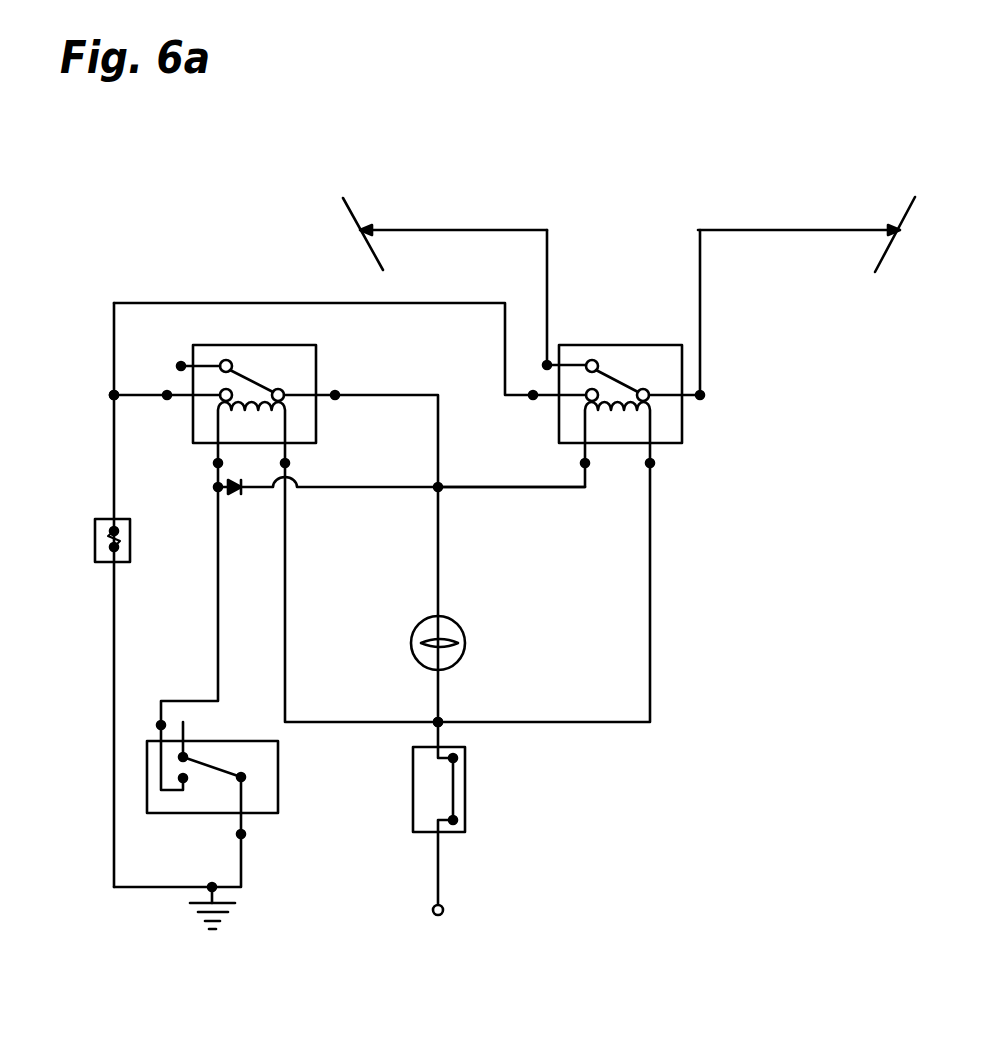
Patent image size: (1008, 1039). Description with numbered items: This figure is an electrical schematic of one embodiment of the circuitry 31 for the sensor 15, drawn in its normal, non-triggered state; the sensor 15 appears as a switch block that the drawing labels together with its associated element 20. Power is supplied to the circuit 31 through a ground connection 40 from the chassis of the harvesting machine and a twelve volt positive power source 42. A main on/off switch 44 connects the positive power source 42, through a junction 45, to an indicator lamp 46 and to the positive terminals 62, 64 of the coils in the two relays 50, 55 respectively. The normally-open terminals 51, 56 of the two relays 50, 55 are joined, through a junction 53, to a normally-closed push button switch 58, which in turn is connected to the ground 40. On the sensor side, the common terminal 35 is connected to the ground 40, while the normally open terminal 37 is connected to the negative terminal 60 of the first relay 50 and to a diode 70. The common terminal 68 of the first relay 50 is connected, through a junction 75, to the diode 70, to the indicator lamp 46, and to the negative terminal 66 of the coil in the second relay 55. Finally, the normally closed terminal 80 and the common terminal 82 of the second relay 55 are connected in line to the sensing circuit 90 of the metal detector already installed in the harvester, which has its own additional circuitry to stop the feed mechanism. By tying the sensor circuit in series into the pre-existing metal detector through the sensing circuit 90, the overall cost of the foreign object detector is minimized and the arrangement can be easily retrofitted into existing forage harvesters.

The sensor 15 is at (257, 767).
The switch actuator 20 is at (266, 762).
The circuitry 31 is at (612, 860).
The common terminal 35 is at (243, 834).
The normally open terminal 37 is at (161, 723).
The ground connection 40 is at (238, 908).
The 12 volt positive power source 42 is at (443, 905).
The main on/off switch 44 is at (458, 787).
The junction 45 is at (442, 718).
The indicator lamp 46 is at (466, 632).
The first relay 50 is at (262, 345).
The normally-open terminal 51 is at (167, 399).
The junction 53 is at (114, 394).
The second relay 55 is at (605, 345).
The normally-open terminal 56 is at (534, 399).
The normally-closed push button switch 58 is at (95, 540).
The negative terminal 60 is at (216, 465).
The positive terminal 62 is at (288, 465).
The positive terminal 64 is at (651, 466).
The negative terminal 66 is at (585, 466).
The common terminal 68 is at (335, 392).
The diode 70 is at (233, 490).
The junction 75 is at (440, 489).
The normally closed terminal 80 is at (547, 366).
The common terminal 82 is at (701, 397).
The sensing circuit 90 is at (463, 230).